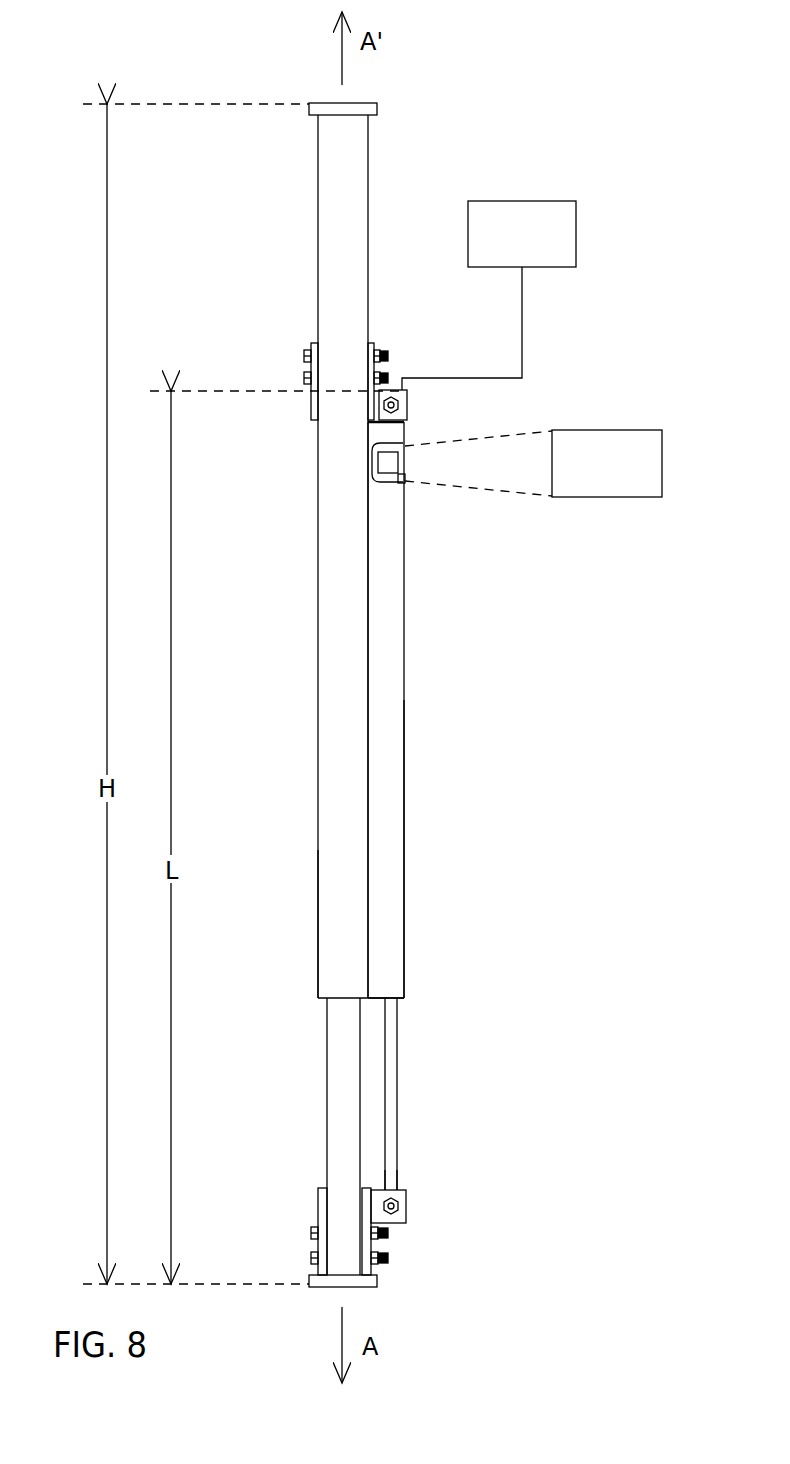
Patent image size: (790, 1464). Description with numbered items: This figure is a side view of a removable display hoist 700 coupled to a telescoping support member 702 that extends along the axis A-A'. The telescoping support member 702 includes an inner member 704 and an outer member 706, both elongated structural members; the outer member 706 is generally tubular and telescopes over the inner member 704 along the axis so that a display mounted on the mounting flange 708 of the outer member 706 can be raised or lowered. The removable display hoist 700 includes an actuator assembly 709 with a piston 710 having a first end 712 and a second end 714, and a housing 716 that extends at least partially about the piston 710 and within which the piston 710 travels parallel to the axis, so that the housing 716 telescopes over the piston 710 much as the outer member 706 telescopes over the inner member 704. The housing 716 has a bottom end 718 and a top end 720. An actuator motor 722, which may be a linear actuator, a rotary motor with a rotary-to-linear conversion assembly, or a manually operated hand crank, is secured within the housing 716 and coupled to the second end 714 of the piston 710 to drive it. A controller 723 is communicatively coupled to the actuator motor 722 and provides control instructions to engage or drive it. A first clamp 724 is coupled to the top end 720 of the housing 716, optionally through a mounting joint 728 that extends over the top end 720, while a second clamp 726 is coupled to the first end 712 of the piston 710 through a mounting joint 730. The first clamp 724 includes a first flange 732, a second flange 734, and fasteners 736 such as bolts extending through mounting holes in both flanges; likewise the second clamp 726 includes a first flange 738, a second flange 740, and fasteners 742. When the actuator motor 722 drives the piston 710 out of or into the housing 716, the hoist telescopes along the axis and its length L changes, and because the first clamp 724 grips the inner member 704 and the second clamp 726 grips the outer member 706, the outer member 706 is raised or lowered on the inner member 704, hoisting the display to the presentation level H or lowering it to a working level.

The removable display hoist 700 is at (406, 465).
The telescoping support member 702 is at (328, 195).
The inner member 704 is at (327, 1090).
The outer member 706 is at (318, 913).
The mounting flange 708 is at (377, 103).
The actuator assembly 709 is at (390, 668).
The piston 710 is at (398, 1090).
The first end 712 is at (398, 1189).
The second end 714 is at (404, 482).
The housing 716 is at (405, 832).
The bottom end 718 is at (398, 1000).
The top end 720 is at (405, 423).
The actuator motor 722 is at (620, 430).
The controller 723 is at (537, 201).
The first clamp 724 is at (317, 1198).
The second clamp 726 is at (316, 341).
The mounting joint 728 is at (394, 389).
The mounting joint 730 is at (406, 1206).
The first flange 732 is at (317, 1222).
The second flange 734 is at (388, 1247).
The fasteners 736 is at (390, 1259).
The first flange 738 is at (312, 405).
The second flange 740 is at (374, 341).
The fasteners 742 is at (388, 355).